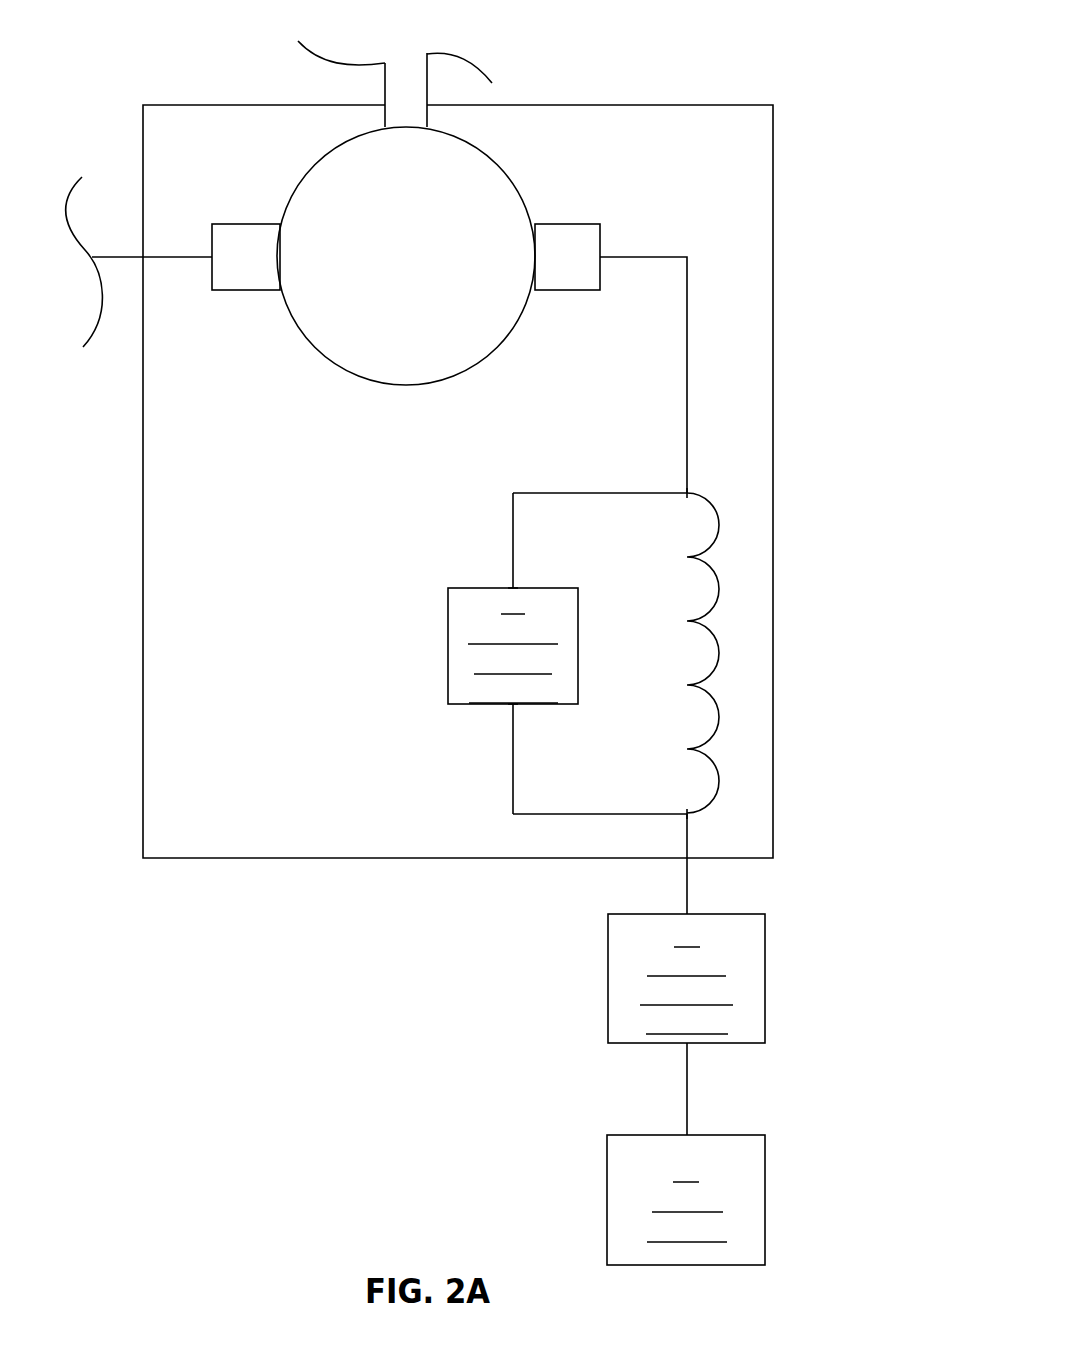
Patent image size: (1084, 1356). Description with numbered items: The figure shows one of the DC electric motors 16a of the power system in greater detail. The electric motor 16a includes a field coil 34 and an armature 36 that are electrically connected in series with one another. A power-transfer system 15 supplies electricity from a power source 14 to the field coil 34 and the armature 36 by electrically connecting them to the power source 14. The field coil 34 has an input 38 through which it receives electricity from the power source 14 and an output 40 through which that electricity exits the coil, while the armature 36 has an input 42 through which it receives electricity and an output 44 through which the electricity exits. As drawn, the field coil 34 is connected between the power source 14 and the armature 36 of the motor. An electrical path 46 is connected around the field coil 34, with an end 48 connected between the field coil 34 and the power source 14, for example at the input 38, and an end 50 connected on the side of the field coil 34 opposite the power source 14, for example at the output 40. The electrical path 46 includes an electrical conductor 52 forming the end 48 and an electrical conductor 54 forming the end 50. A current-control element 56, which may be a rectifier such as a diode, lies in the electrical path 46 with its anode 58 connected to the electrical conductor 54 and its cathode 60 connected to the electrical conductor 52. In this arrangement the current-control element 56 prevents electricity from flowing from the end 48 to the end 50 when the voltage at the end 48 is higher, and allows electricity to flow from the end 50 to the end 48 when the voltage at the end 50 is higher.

The electric motor 16a is at (736, 105).
The output 44 is at (212, 257).
The input 42 is at (600, 257).
The armature 36 is at (330, 363).
The end 50 is at (687, 493).
The output 40 is at (687, 493).
The field coil 34 is at (720, 587).
The input 38 is at (687, 814).
The electrical path 46 is at (524, 593).
The electrical conductor 54 is at (513, 528).
The anode 58 is at (513, 588).
The current-control element 56 is at (513, 646).
The cathode 60 is at (513, 704).
The electrical conductor 52 is at (513, 760).
The end 48 is at (687, 814).
The power-transfer system 15 is at (686, 978).
The power source 14 is at (686, 1200).